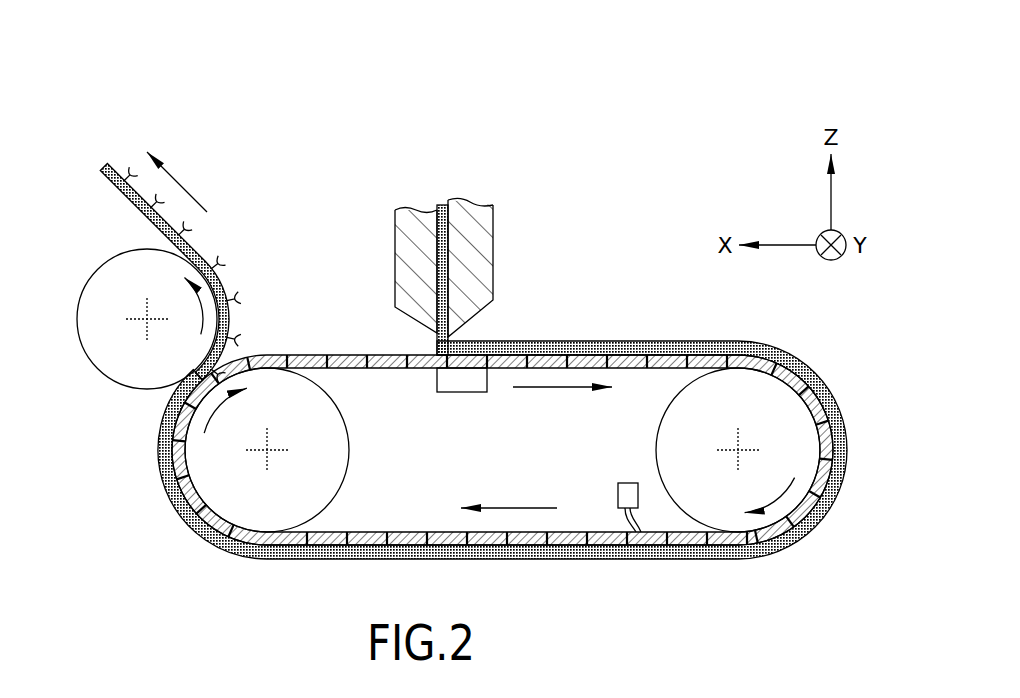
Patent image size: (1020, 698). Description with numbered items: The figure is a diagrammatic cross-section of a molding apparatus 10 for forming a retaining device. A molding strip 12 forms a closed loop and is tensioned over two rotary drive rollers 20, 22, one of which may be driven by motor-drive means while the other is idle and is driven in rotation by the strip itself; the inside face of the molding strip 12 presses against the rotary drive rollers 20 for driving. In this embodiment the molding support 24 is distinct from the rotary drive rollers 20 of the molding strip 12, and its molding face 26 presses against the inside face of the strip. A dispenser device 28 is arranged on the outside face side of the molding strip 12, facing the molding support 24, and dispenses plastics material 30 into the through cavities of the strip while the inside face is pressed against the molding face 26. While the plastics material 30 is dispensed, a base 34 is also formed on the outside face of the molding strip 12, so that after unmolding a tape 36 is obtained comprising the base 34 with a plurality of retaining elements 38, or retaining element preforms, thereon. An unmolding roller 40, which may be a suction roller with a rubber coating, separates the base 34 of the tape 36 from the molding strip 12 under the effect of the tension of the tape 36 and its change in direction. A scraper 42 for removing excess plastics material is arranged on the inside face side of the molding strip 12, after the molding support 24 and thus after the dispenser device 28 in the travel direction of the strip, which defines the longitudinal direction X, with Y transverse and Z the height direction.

The molding apparatus 10 is at (626, 197).
The molding strip 12 is at (325, 354).
The rotary drive roller 20 is at (656, 451).
The rotary drive roller 22 is at (333, 451).
The molding support 24 is at (462, 393).
The molding face 26 is at (438, 352).
The dispenser device 28 is at (487, 250).
The plastics material 30 is at (422, 246).
The base 34 is at (560, 558).
The tape 36 is at (114, 203).
The retaining elements 38 is at (216, 257).
The unmolding roller 40 is at (90, 322).
The scraper 42 is at (623, 523).